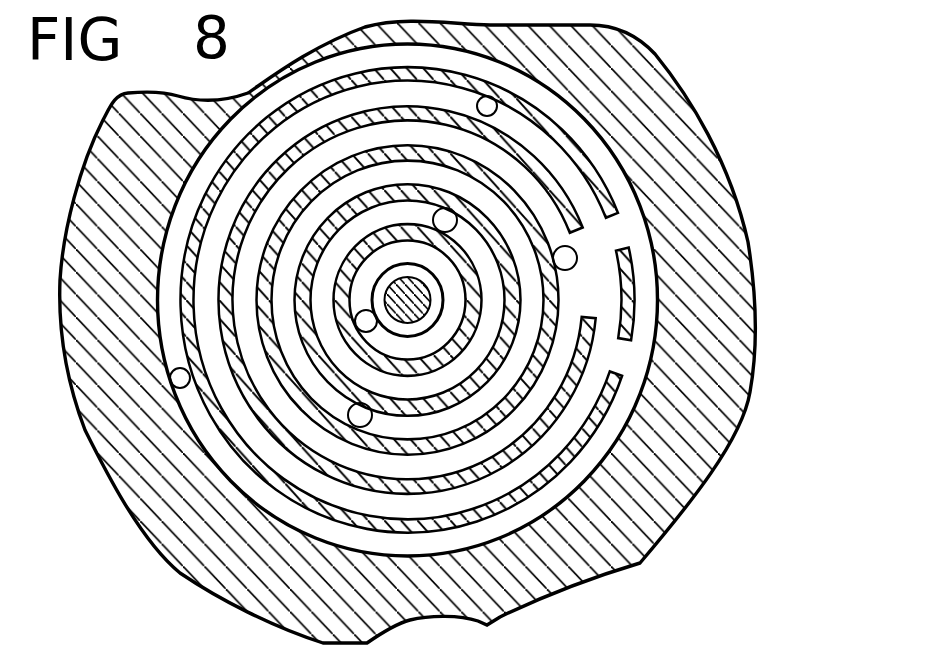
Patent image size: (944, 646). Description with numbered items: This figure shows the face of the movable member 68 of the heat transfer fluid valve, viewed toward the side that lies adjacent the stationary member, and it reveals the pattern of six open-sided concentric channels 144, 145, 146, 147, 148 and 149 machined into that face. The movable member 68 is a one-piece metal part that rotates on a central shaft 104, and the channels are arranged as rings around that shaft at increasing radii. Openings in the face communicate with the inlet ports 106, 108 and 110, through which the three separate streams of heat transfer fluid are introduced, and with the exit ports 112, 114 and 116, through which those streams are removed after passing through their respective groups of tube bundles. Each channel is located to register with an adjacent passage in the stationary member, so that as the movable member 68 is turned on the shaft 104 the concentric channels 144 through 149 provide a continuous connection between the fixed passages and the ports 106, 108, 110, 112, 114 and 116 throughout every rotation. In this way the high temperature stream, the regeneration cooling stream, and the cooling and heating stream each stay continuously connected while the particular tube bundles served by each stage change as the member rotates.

The movable member 68 is at (133, 524).
The shaft 104 is at (422, 292).
The inlet port 106 is at (372, 418).
The inlet port 108 is at (478, 104).
The inlet port 110 is at (373, 331).
The exit port 112 is at (573, 250).
The exit port 114 is at (171, 385).
The exit port 116 is at (434, 221).
The concentric channel 144 is at (457, 327).
The concentric channel 145 is at (306, 324).
The concentric channel 146 is at (518, 382).
The concentric channel 147 is at (377, 468).
The concentric channel 148 is at (606, 380).
The concentric channel 149 is at (166, 339).